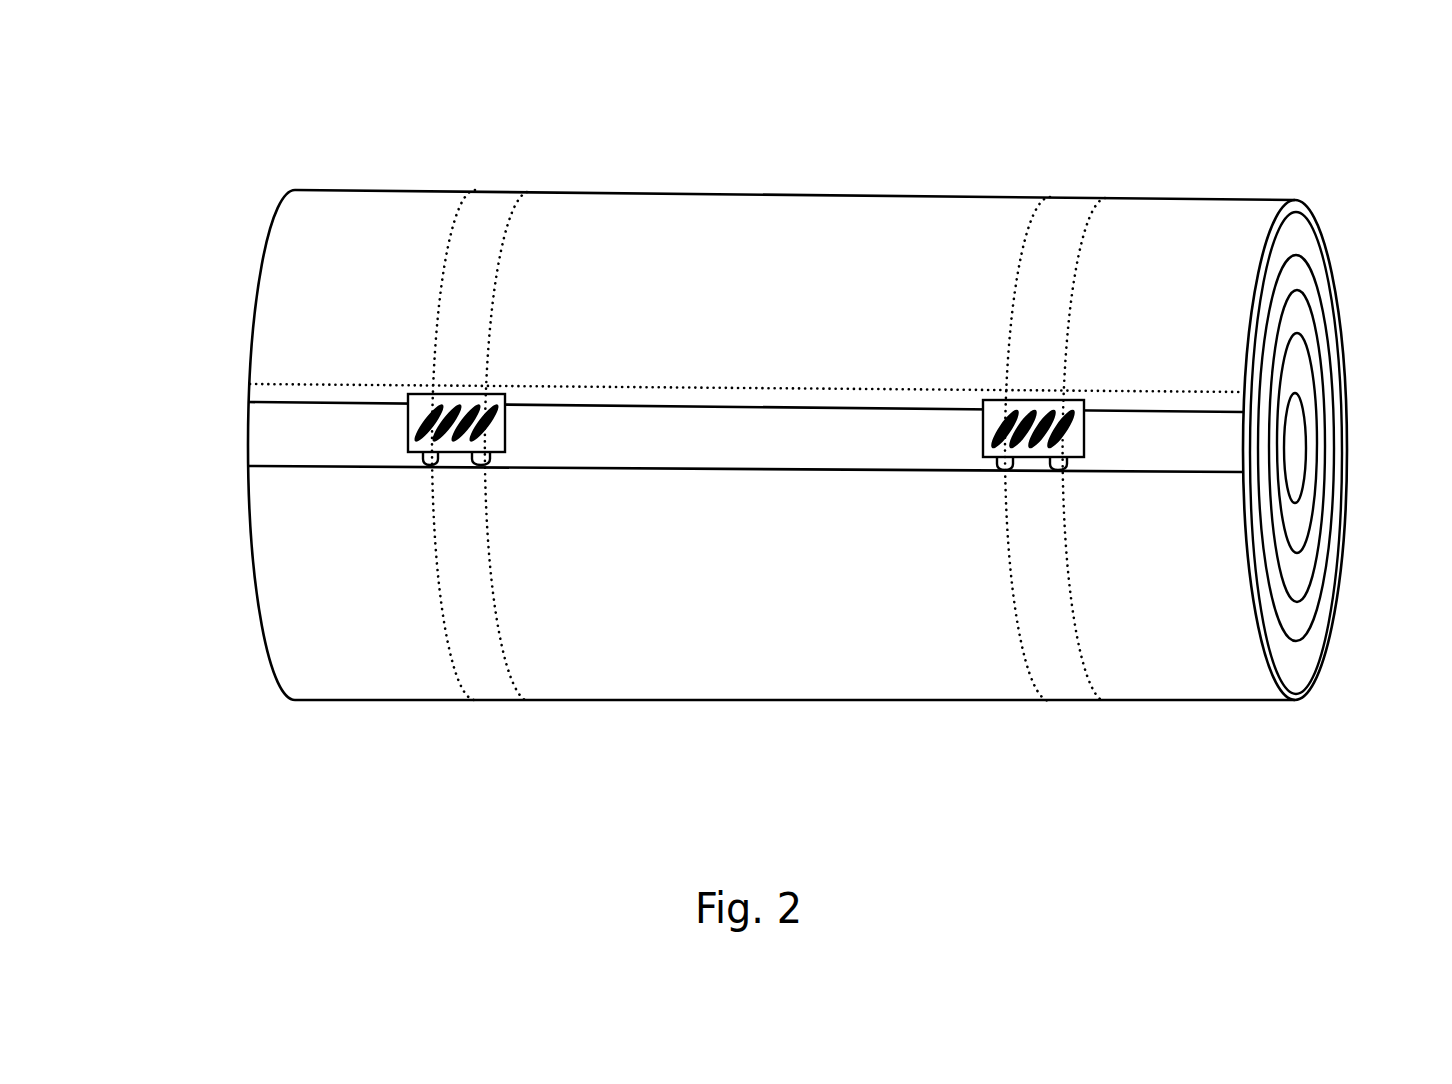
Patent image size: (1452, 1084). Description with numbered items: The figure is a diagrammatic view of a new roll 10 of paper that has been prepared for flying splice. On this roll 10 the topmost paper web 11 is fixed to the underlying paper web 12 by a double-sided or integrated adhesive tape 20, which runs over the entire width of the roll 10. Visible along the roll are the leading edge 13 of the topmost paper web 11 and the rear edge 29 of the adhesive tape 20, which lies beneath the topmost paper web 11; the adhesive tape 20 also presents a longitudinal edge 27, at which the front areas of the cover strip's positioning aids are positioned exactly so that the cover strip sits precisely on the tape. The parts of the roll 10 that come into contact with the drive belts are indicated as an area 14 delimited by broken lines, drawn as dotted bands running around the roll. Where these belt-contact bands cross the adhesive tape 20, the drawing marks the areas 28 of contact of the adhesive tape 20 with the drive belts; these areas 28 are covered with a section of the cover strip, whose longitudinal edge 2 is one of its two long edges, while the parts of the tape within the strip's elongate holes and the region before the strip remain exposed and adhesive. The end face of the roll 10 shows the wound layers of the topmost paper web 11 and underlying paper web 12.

The longitudinal edge 2 is at (1040, 402).
The roll 10 is at (380, 753).
The topmost paper web 11 is at (1212, 357).
The underlying paper web 12 is at (1235, 593).
The leading edge of the topmost paper web 13 is at (1165, 413).
The area of contact with the drive belts 14 is at (466, 273).
The adhesive tape 20 is at (238, 382).
The longitudinal edge of the adhesive tape 27 is at (398, 468).
The area of contact of the adhesive tape with the drive belts 28 is at (1032, 465).
The rear edge of the adhesive tape 29 is at (363, 403).